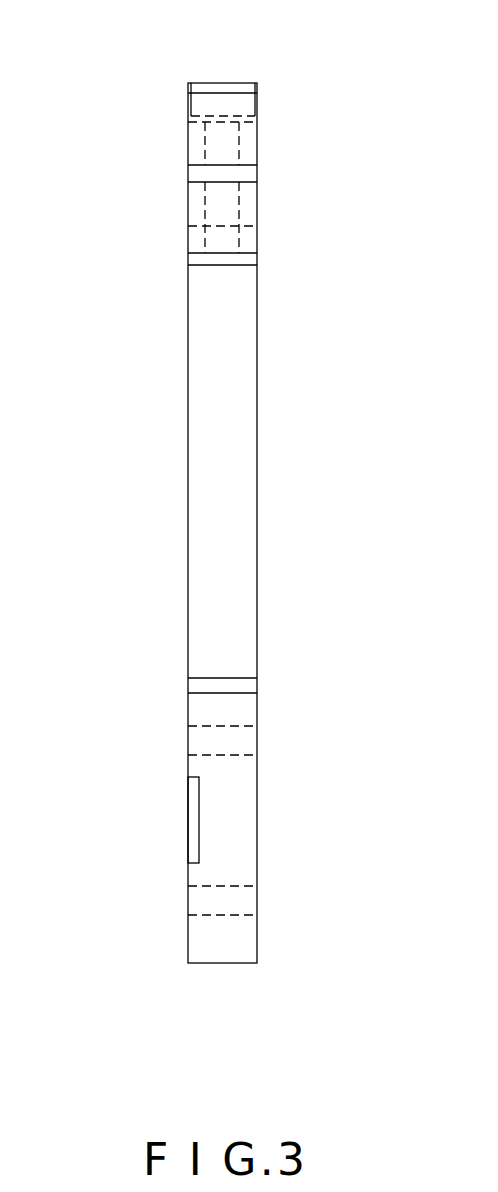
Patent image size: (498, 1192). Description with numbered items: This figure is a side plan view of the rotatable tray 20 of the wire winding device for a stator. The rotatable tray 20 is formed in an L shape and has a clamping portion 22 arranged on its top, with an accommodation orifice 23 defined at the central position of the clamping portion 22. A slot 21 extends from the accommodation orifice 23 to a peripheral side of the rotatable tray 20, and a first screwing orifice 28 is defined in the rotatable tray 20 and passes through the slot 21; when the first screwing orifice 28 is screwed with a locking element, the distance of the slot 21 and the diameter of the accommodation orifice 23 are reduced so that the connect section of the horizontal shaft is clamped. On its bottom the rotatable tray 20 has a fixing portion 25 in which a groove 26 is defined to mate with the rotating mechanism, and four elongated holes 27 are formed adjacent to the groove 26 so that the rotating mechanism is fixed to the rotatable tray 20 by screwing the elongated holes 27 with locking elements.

The rotatable tray 20 is at (212, 455).
The slot 21 is at (195, 172).
The clamping portion 22 is at (220, 88).
The accommodation orifice 23 is at (250, 140).
The fixing portion 25 is at (237, 708).
The groove 26 is at (192, 819).
The elongated holes 27 is at (203, 741).
The first screwing orifice 28 is at (230, 240).